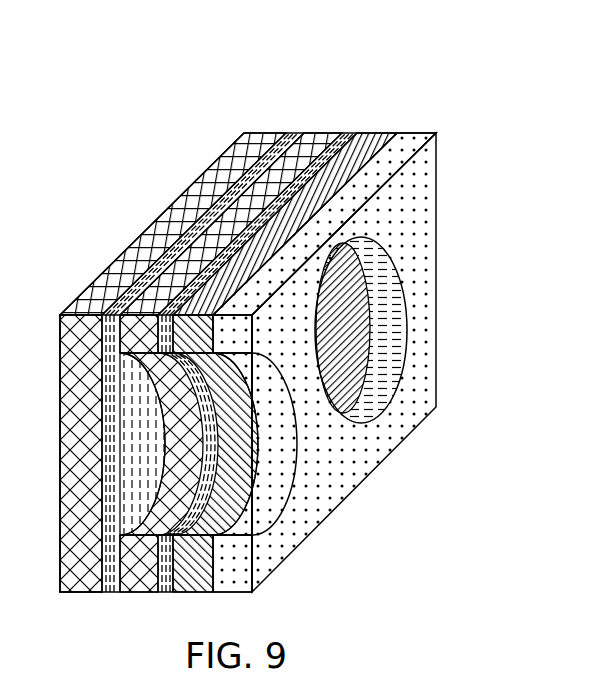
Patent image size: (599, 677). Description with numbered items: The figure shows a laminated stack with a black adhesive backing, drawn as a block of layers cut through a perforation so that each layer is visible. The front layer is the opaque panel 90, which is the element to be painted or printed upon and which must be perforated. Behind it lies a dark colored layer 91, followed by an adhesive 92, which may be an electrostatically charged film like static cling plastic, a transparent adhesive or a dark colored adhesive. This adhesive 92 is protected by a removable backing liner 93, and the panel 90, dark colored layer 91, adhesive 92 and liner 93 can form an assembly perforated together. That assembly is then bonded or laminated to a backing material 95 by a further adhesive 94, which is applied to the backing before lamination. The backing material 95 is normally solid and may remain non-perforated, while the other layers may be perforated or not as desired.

The opaque panel 90 is at (434, 203).
The dark colored layer 91 is at (392, 135).
The adhesive 92 is at (355, 135).
The removable backing liner 93 is at (323, 135).
The adhesive 94 is at (295, 133).
The backing material 95 is at (122, 260).